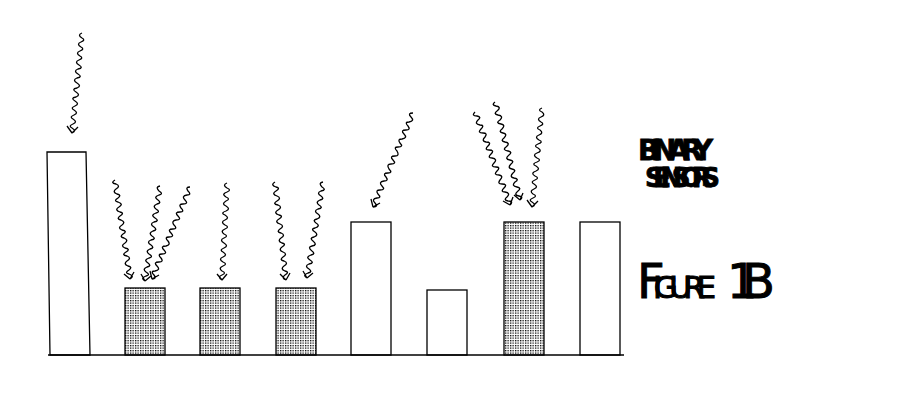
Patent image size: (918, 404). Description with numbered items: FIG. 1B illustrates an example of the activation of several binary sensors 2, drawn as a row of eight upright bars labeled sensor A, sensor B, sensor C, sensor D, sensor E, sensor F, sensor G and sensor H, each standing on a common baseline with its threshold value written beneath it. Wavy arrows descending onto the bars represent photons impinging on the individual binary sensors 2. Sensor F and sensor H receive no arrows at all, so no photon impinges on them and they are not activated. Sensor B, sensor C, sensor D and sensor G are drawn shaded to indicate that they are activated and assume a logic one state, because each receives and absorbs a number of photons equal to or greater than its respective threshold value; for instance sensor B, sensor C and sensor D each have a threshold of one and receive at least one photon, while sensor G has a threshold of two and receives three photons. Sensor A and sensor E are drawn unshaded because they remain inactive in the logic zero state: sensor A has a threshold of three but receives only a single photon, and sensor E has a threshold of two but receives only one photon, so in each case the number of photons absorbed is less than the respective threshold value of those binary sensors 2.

The binary sensors 2 is at (363, 207).
The sensor A is at (68, 253).
The sensor B is at (145, 321).
The sensor C is at (220, 321).
The sensor D is at (296, 321).
The sensor E is at (371, 288).
The sensor F is at (447, 322).
The sensor G is at (524, 288).
The sensor H is at (600, 288).